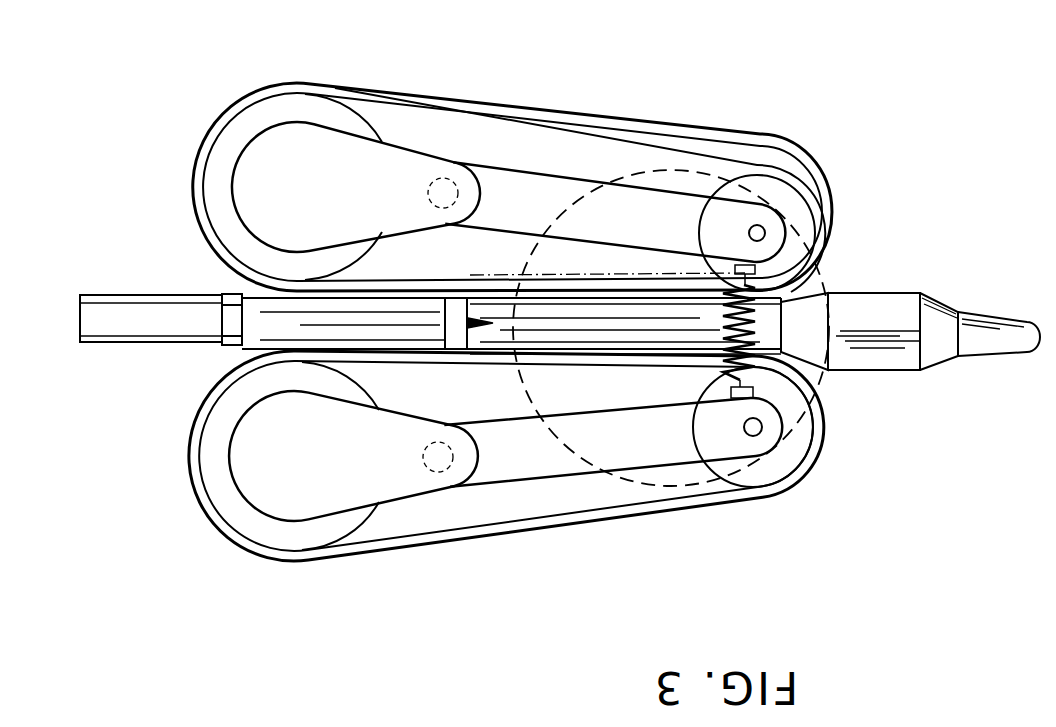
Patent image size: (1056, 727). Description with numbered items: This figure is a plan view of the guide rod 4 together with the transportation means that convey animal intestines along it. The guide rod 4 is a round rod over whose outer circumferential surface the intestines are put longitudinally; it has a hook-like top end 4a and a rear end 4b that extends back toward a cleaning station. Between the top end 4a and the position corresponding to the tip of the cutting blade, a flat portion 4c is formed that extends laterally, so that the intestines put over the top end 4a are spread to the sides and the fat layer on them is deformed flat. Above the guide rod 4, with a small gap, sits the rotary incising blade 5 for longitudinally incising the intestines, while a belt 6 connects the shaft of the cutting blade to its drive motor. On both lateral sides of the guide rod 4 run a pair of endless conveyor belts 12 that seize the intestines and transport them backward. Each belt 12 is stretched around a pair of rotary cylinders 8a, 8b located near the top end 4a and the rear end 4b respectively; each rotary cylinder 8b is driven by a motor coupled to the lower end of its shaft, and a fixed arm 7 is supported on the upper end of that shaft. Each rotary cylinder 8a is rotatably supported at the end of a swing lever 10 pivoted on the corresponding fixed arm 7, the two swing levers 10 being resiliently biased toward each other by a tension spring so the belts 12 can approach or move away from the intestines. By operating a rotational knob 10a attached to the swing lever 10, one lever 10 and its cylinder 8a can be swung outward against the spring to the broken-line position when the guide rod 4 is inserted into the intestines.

The guide rod 4 is at (122, 330).
The top end 4a is at (1005, 340).
The rear end 4b is at (100, 290).
The flat portion 4c is at (878, 362).
The rotary incising blade 5 is at (205, 318).
The belt 6 is at (803, 286).
The fixed arm 7 is at (278, 142).
The rotary cylinder 8a is at (813, 183).
The rotary cylinder 8b is at (232, 138).
The swing lever 10 is at (612, 203).
The rotational knob 10a is at (757, 226).
The endless conveyor belt 12 is at (458, 112).